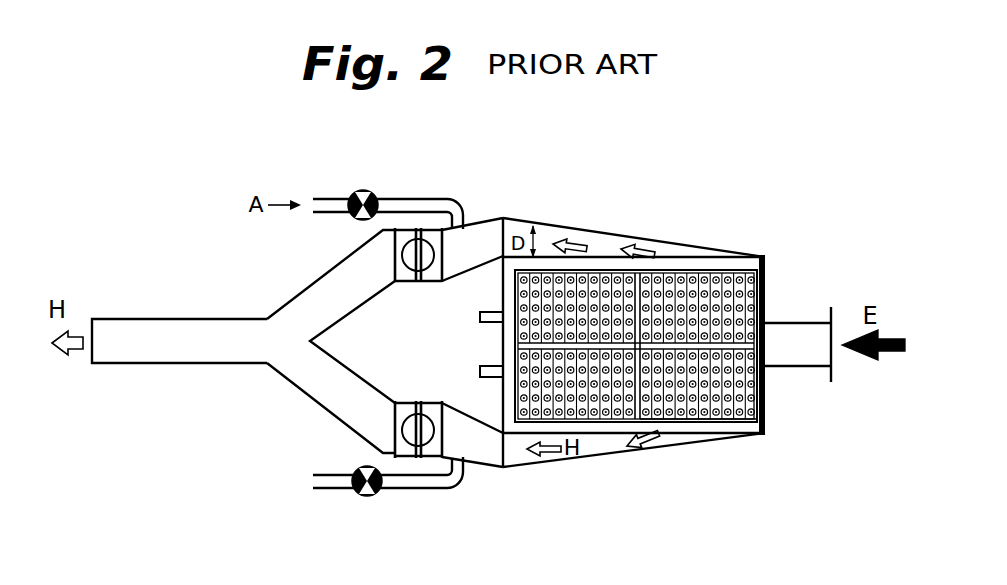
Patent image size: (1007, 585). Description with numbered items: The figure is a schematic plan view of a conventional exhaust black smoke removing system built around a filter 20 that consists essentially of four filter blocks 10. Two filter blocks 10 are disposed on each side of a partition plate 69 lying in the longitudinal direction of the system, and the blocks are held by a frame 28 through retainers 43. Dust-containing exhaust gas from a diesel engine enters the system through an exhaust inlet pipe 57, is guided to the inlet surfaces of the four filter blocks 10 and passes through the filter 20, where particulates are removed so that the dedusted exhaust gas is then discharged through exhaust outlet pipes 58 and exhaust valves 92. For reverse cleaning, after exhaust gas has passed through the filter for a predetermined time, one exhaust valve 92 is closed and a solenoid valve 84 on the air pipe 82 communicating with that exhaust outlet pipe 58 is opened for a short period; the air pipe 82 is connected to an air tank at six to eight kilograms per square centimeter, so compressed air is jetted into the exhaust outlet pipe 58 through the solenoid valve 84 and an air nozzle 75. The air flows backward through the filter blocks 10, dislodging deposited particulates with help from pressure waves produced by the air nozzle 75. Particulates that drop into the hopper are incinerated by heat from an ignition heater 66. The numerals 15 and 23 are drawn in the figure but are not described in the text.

The filter block 10 is at (700, 254).
The lower filter element 15 is at (712, 420).
The filter 20 is at (672, 238).
The particulate filter 23 is at (605, 268).
The frame 28 is at (766, 258).
The retainer 43 is at (750, 290).
The exhaust inlet pipe 57 is at (812, 368).
The exhaust outlet pipe 58 is at (489, 242).
The ignition heater 66 is at (480, 317).
The partition plate 69 is at (708, 355).
The air nozzle 75 is at (465, 212).
The air pipe 82 is at (421, 197).
The solenoid valve 84 is at (363, 190).
The exhaust valve 92 is at (407, 283).